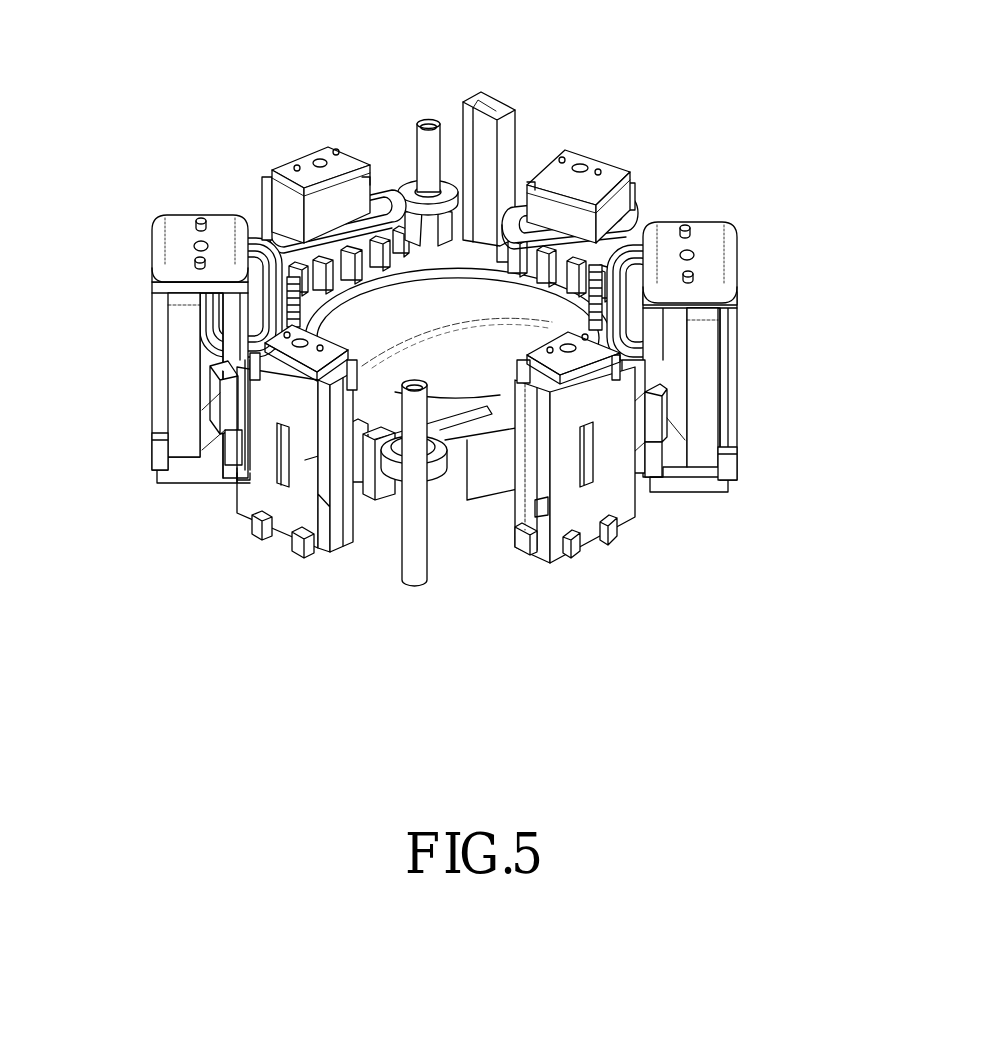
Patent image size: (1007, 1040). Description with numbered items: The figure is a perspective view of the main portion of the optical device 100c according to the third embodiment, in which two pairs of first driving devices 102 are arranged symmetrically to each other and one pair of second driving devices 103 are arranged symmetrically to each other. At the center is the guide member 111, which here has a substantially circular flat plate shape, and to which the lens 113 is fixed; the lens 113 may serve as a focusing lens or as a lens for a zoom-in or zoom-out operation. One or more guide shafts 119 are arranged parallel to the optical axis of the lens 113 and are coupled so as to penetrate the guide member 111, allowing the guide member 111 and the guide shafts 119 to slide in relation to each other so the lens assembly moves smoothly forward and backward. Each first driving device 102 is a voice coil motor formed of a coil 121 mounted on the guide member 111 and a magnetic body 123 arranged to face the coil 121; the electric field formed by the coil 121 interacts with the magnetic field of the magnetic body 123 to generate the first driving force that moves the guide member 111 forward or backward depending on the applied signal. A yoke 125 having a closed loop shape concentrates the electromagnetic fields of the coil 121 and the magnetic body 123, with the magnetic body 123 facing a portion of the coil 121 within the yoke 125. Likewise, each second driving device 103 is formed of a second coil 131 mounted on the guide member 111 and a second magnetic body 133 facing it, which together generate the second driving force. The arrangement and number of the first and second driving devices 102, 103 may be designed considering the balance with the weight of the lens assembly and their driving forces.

The optical device 100c is at (740, 120).
The first driving device 102 is at (440, 357).
The second driving device 103 is at (268, 556).
The guide member 111 is at (447, 437).
The lens 113 is at (476, 312).
The guide shaft 119 is at (428, 122).
The coil 121 is at (207, 353).
The magnetic body 123 is at (180, 329).
The yoke 125 is at (157, 451).
The second coil 131 is at (383, 192).
The second magnetic body 133 is at (283, 206).